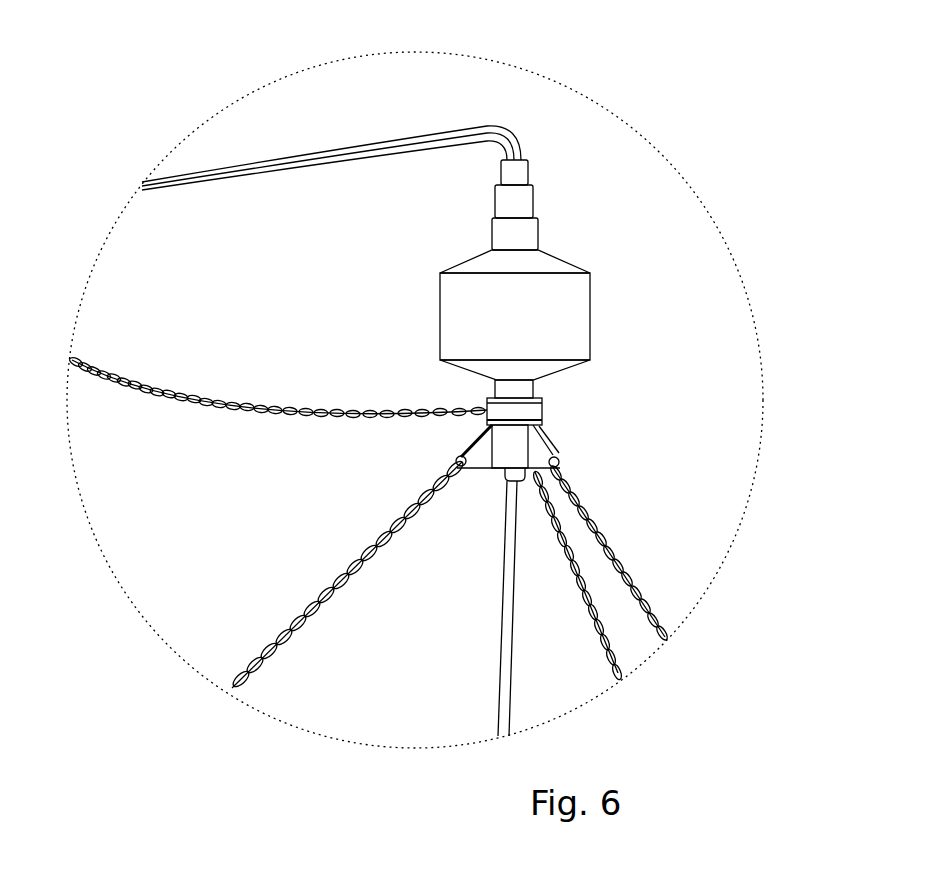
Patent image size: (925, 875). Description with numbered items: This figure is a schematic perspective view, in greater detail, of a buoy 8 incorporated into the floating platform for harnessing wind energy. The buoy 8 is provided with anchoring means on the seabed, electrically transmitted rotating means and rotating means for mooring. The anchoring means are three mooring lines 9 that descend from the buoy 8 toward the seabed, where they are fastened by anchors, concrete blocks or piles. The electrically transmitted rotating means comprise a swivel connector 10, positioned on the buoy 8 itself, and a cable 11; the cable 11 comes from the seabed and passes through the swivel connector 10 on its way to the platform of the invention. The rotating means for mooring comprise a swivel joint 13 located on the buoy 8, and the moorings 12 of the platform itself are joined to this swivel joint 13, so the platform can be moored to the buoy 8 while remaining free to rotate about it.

The buoy 8 is at (575, 312).
The mooring lines 9 is at (417, 522).
The swivel connector 10 is at (530, 232).
The cable 11 is at (305, 153).
The moorings 12 is at (143, 393).
The swivel joint 13 is at (540, 405).